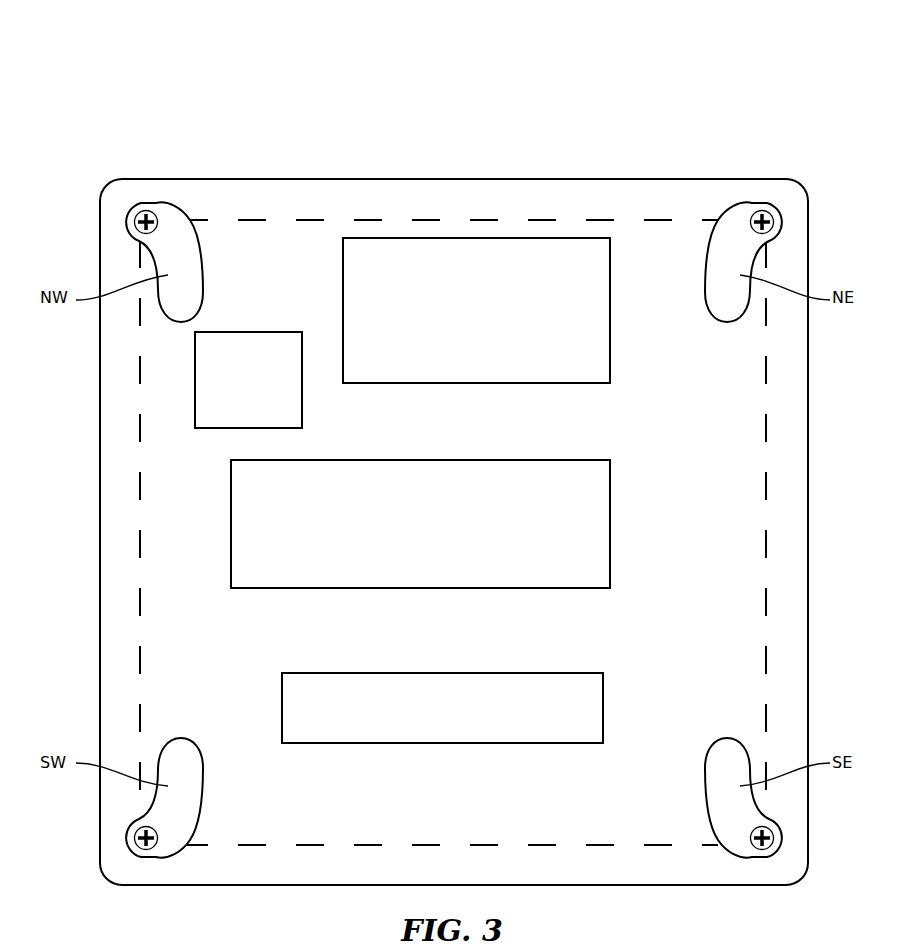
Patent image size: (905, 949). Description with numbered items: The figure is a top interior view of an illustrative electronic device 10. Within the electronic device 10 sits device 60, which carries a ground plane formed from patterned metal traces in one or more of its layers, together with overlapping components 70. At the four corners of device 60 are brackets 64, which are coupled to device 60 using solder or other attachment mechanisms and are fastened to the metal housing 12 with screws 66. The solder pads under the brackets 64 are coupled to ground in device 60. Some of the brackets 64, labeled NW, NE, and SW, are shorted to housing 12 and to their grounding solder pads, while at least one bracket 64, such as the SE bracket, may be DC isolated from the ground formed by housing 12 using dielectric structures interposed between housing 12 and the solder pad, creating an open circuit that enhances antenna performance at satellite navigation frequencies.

The electronic device 10 is at (547, 62).
The housing 12 is at (100, 413).
The device 60 is at (308, 220).
The brackets 64 is at (203, 302).
The screws 66 is at (128, 222).
The overlapping components 70 is at (343, 305).